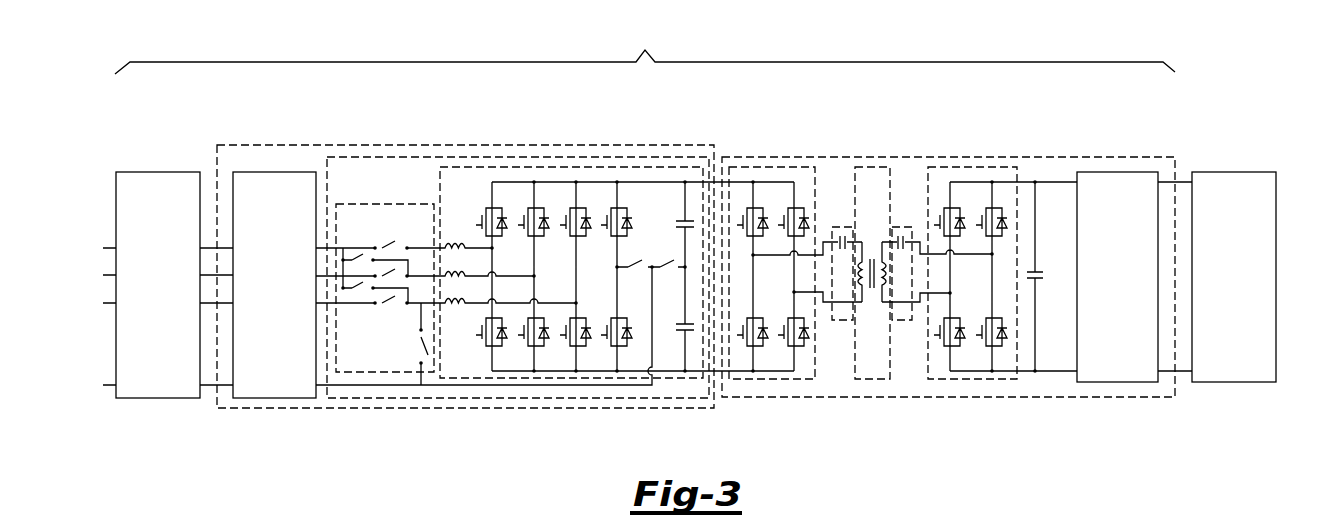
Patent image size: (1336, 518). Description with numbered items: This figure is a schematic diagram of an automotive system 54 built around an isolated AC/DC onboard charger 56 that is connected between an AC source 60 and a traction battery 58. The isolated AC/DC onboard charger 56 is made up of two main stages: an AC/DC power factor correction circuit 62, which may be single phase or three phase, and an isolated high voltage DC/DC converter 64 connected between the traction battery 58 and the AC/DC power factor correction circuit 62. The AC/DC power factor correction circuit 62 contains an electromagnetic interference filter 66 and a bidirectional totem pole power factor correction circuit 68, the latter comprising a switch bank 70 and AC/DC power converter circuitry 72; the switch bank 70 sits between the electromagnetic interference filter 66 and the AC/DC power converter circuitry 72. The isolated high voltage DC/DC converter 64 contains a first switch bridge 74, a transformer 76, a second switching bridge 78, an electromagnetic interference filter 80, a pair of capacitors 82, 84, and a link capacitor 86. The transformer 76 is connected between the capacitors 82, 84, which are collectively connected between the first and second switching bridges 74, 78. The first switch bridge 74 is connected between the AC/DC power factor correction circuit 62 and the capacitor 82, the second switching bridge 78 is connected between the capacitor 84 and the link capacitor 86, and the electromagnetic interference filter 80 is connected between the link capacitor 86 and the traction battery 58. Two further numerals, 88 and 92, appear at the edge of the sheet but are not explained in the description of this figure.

The automotive system 54 is at (1247, 72).
The isolated AC/DC onboard charger 56 is at (645, 48).
The traction battery 58 is at (1235, 172).
The AC source 60 is at (160, 172).
The AC/DC power factor correction circuit 62 is at (466, 145).
The isolated high voltage DC/DC converter 64 is at (1050, 157).
The electromagnetic interference filter 66 is at (275, 172).
The bidirectional totem pole power factor correction circuit 68 is at (521, 157).
The switch bank 70 is at (388, 204).
The AC/DC power converter circuitry 72 is at (590, 167).
The first switch bridge 74 is at (773, 167).
The transformer 76 is at (873, 167).
The second switching bridge 78 is at (973, 167).
The electromagnetic interference filter 80 is at (1118, 172).
The capacitor 82 is at (843, 227).
The capacitor 84 is at (905, 227).
The link capacitor 86 is at (1038, 270).
The reference numeral 88 is at (989, 517).
The reference numeral 92 is at (540, 513).